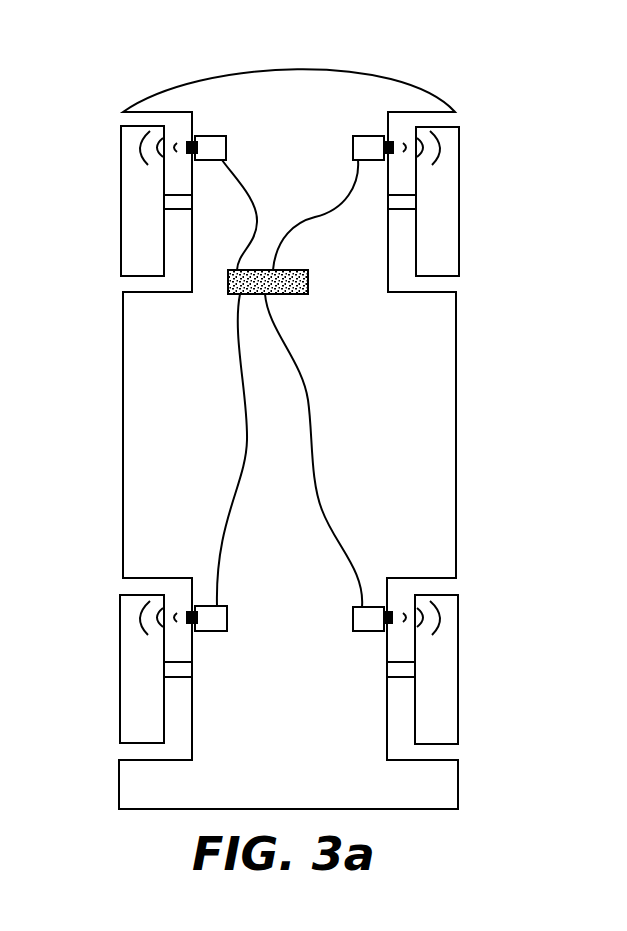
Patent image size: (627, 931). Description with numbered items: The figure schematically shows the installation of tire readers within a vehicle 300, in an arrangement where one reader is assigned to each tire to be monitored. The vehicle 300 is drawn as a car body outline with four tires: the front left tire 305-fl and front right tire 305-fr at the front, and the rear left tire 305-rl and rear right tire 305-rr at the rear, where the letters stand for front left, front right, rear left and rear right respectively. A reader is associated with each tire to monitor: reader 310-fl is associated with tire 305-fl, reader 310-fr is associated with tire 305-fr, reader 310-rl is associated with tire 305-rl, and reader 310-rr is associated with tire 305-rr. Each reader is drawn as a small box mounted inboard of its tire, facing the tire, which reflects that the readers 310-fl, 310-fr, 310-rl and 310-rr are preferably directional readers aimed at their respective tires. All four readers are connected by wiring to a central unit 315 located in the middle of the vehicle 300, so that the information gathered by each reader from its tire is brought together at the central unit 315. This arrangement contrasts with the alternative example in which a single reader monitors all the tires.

The vehicle 300 is at (327, 70).
The front left tire 305-fl is at (124, 183).
The front right tire 305-fr is at (455, 185).
The rear left tire 305-rl is at (125, 690).
The rear right tire 305-rr is at (455, 690).
The reader 310-fl is at (225, 135).
The reader 310-fr is at (357, 137).
The reader 310-rl is at (222, 632).
The reader 310-rr is at (353, 632).
The central unit 315 is at (284, 297).